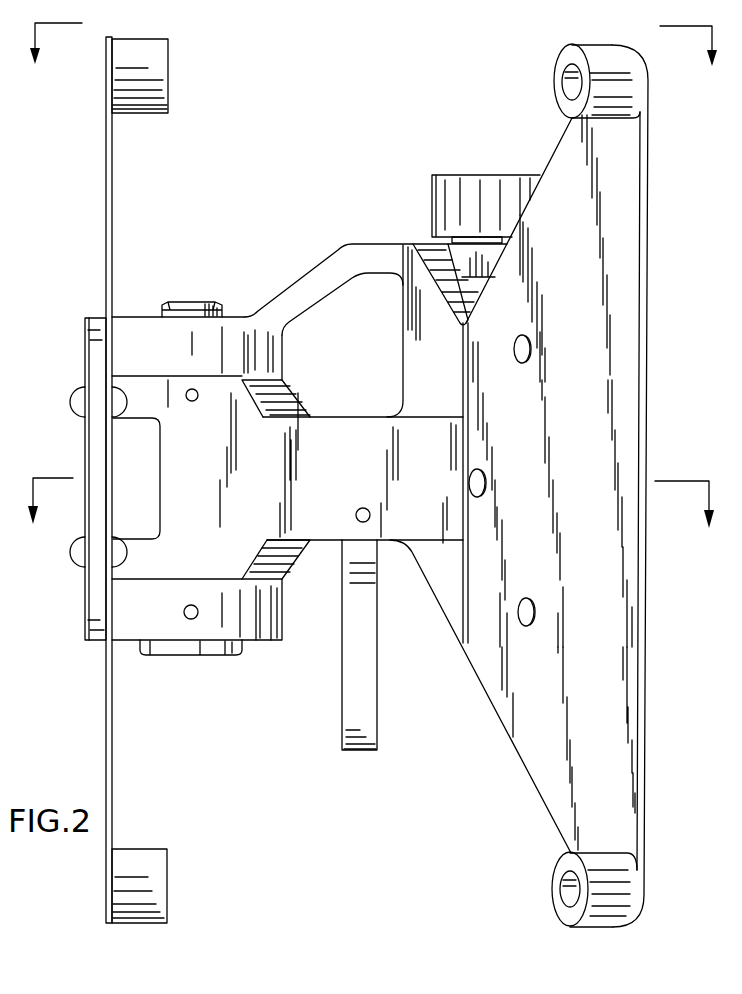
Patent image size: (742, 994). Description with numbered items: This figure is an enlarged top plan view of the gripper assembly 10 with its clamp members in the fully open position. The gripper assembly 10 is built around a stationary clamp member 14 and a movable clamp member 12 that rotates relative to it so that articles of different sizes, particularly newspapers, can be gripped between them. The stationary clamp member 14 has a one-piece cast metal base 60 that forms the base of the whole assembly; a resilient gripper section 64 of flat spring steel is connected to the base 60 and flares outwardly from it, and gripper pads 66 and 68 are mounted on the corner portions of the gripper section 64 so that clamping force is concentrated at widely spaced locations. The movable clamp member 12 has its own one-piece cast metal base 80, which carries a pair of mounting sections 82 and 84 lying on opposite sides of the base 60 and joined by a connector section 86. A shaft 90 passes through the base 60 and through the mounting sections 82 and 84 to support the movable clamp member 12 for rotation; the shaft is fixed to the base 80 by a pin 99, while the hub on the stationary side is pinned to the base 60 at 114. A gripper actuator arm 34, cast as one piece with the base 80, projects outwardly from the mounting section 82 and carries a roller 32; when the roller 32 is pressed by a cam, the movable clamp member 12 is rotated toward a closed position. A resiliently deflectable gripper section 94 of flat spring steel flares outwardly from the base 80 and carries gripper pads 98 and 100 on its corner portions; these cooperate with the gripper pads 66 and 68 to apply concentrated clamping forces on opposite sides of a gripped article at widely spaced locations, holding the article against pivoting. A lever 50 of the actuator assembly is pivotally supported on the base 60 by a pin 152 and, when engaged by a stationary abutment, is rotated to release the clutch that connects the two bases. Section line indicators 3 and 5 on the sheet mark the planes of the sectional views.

The section line 3- 3 is at (373, 57).
The section line 5- 5 is at (370, 517).
The gripper assembly 10 is at (688, 291).
The movable clamp member 12 is at (125, 480).
The stationary clamp member 14 is at (535, 820).
The roller 32 is at (458, 200).
The gripper actuator arm 34 is at (347, 250).
The lever 50 is at (355, 722).
The base 60 is at (288, 394).
The resilient gripper section 64 is at (583, 485).
The gripper pad 66 is at (563, 72).
The gripper pad 68 is at (555, 878).
The base 80 is at (168, 480).
The mounting section 82 is at (143, 330).
The mounting section 84 is at (125, 623).
The connector section 86 is at (97, 598).
The shaft 90 is at (192, 303).
The gripper section 94 is at (108, 770).
The gripper pad 98 is at (158, 77).
The pin 99 is at (193, 605).
The gripper pad 100 is at (154, 888).
The pin connection location 114 is at (192, 401).
The pin 152 is at (358, 511).